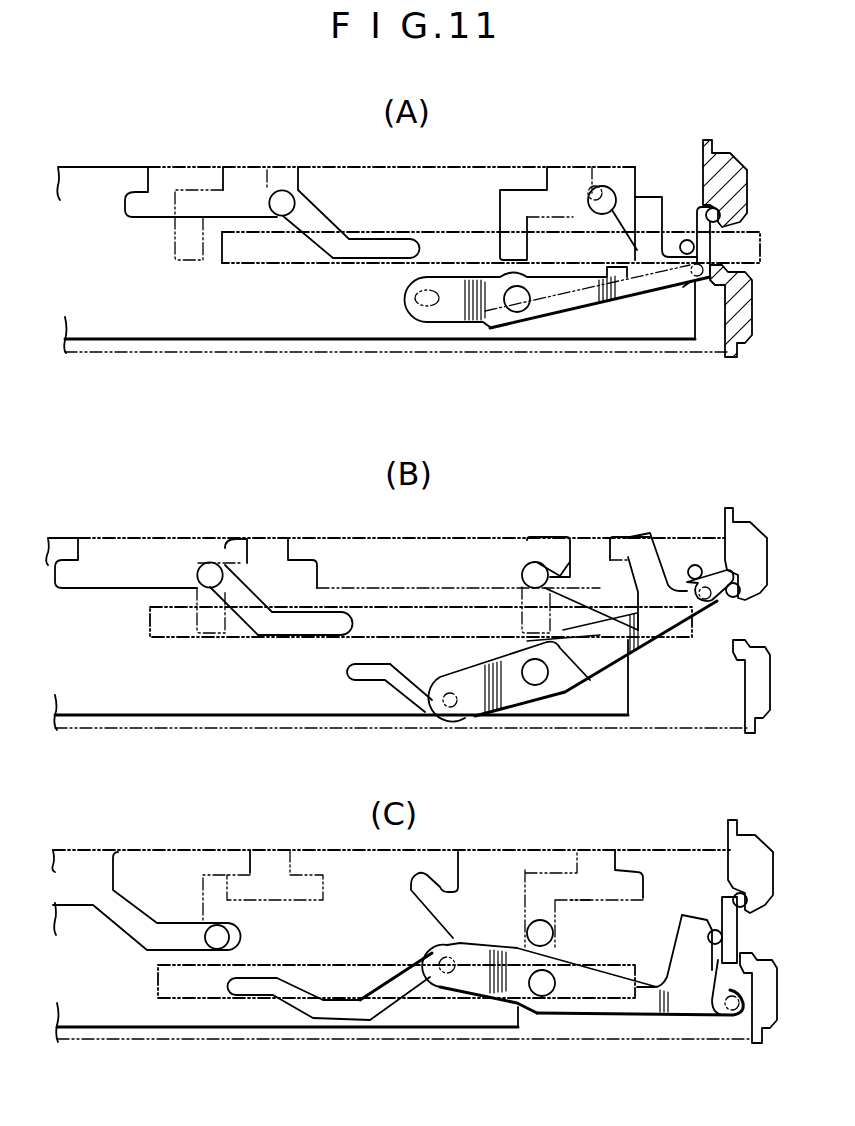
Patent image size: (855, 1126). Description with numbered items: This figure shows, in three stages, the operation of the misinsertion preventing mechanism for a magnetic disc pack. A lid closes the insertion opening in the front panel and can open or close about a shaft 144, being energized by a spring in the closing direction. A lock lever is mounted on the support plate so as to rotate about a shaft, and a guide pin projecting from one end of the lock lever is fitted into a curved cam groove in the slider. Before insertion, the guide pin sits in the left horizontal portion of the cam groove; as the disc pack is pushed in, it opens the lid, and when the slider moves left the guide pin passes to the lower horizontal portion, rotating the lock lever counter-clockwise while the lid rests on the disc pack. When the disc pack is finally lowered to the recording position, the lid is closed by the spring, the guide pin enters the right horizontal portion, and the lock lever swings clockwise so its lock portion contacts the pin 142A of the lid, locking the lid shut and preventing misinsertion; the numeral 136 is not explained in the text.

The engaging portion 136 is at (683, 287).
The pin 142A is at (710, 977).
The shaft 144 is at (685, 200).